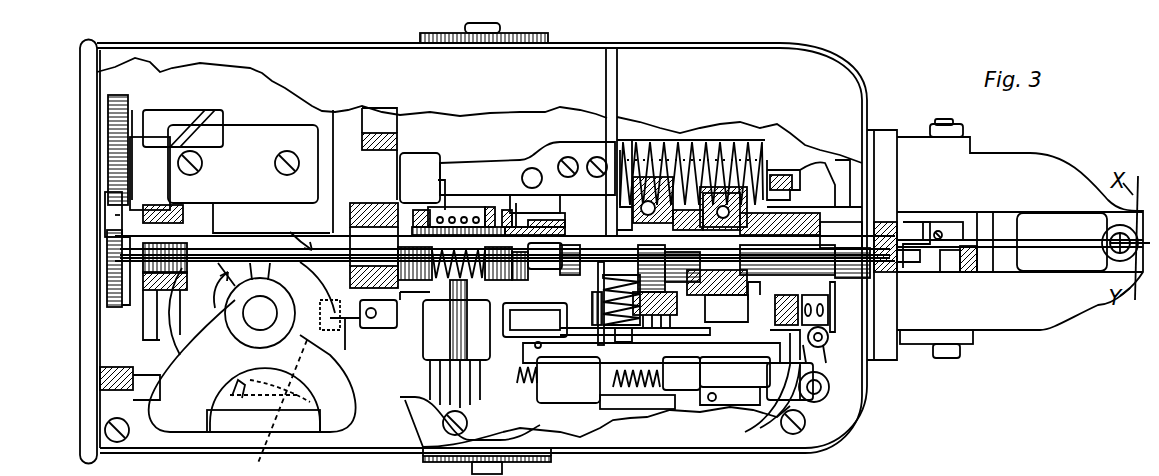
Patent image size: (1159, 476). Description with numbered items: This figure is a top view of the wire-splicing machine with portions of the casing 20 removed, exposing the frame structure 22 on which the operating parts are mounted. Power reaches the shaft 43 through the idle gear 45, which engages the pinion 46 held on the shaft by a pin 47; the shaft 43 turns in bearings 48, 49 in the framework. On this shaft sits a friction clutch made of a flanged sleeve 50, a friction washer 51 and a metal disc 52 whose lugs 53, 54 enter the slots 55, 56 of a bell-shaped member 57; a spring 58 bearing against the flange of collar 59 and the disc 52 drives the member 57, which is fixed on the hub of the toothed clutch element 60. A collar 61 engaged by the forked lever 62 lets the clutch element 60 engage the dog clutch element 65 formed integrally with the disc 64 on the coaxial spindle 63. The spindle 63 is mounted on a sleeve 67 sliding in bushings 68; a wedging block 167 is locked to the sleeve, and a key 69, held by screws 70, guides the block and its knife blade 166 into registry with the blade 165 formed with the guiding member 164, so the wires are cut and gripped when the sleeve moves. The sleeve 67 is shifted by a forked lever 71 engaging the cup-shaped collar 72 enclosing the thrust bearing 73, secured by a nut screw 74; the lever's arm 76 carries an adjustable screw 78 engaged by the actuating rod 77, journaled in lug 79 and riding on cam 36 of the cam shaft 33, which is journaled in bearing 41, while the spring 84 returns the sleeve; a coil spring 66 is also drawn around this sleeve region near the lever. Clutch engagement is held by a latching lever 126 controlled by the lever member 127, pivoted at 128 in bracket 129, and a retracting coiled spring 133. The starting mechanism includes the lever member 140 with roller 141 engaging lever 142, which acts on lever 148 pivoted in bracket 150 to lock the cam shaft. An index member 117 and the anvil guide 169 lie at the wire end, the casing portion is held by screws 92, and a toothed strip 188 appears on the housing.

The casing 20 is at (546, 44).
The frame structure 22 is at (672, 430).
The adjusting knob 188 is at (496, 36).
The screw 92 is at (902, 135).
The index member 117 is at (1142, 303).
The guide 169 is at (1052, 265).
The screw 70 is at (985, 225).
The guiding member 164 is at (968, 272).
The knife blade 165 is at (950, 272).
The key 69 is at (940, 230).
The wedging block 167 is at (937, 229).
The knife blade 166 is at (905, 263).
The spindle 63 is at (930, 270).
The sleeve 67 is at (880, 218).
The idle gear 45 is at (128, 108).
The pinion 46 is at (105, 220).
The pin 47 is at (133, 300).
The bearing 48 is at (198, 214).
The shaft 43 is at (263, 259).
The shaft 33 is at (258, 314).
The bearing 41 is at (267, 327).
The bracket 150 is at (295, 388).
The cam 36 is at (352, 352).
The lever 148 is at (350, 364).
The bell-shaped member 57 is at (528, 230).
The bearing 49 is at (355, 200).
The flanged sleeve 50 is at (374, 245).
The collar 59 is at (413, 210).
The slot 55 is at (466, 207).
The metal disc 52 is at (490, 207).
The lug 53 is at (510, 210).
The friction washer 51 is at (524, 183).
The pivot 128 is at (556, 160).
The bracket 129 is at (528, 165).
The forked lever 62 is at (612, 122).
The lever member 127 is at (624, 140).
The disc 64 is at (622, 145).
The spring 66 is at (658, 150).
The spring 84 is at (692, 150).
The nut screw 74 is at (727, 150).
The forked lever 71 is at (775, 165).
The arm 76 is at (820, 165).
The bushing 68 is at (845, 175).
The toothed clutch element 60 is at (575, 226).
The dog clutch element 65 is at (595, 262).
The cup-shaped collar 72 is at (715, 211).
The thrust bearing 73 is at (805, 245).
The adjustable screw 78 is at (761, 301).
The collar 61 is at (537, 261).
The spring 58 is at (456, 344).
The slot 56 is at (467, 299).
The lug 54 is at (487, 300).
The latching lever 126 is at (545, 347).
The coiled spring 133 is at (512, 392).
The lug 79 is at (688, 330).
The actuating rod 77 is at (738, 336).
The lever 142 is at (759, 387).
The roller 141 is at (824, 345).
The lever member 140 is at (830, 388).